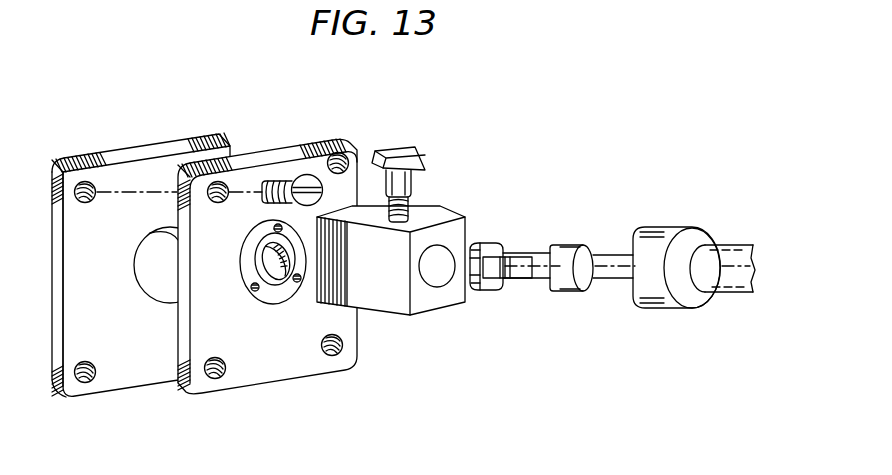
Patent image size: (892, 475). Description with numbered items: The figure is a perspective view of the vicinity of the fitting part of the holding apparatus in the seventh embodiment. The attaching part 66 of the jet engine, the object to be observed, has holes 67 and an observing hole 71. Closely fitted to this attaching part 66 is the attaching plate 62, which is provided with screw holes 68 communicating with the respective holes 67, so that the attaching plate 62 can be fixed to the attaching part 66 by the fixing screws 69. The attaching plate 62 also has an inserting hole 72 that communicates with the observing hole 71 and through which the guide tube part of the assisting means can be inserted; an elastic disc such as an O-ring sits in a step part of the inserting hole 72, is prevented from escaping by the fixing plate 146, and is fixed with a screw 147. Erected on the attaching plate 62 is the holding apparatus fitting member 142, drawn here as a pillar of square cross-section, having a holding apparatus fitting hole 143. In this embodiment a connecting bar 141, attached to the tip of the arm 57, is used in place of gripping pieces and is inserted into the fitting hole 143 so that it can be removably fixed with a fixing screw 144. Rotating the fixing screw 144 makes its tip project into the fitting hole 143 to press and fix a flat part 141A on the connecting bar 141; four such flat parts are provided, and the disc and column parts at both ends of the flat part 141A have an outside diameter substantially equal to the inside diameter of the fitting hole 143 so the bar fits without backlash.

The attaching part 66 is at (172, 152).
The holes 67 is at (93, 182).
The observing hole 71 is at (173, 297).
The attaching plate 62 is at (322, 138).
The screw holes 68 is at (348, 162).
The fixing screws 69 is at (283, 176).
The fixing plate 146 is at (287, 321).
The inserting hole 72 is at (280, 276).
The screw 147 is at (298, 290).
The holding apparatus fitting member 142 is at (404, 284).
The holding apparatus fitting hole 143 is at (443, 273).
The fixing screw 144 is at (412, 168).
The connecting bar 141 is at (552, 252).
The flat part 141A is at (534, 258).
The arm 57 is at (730, 293).